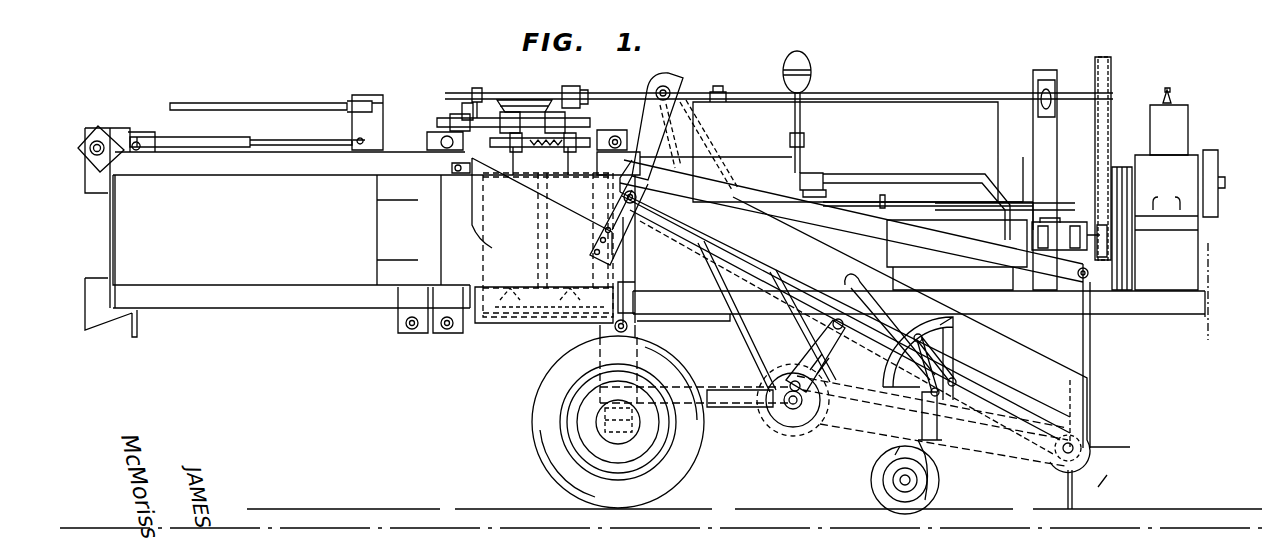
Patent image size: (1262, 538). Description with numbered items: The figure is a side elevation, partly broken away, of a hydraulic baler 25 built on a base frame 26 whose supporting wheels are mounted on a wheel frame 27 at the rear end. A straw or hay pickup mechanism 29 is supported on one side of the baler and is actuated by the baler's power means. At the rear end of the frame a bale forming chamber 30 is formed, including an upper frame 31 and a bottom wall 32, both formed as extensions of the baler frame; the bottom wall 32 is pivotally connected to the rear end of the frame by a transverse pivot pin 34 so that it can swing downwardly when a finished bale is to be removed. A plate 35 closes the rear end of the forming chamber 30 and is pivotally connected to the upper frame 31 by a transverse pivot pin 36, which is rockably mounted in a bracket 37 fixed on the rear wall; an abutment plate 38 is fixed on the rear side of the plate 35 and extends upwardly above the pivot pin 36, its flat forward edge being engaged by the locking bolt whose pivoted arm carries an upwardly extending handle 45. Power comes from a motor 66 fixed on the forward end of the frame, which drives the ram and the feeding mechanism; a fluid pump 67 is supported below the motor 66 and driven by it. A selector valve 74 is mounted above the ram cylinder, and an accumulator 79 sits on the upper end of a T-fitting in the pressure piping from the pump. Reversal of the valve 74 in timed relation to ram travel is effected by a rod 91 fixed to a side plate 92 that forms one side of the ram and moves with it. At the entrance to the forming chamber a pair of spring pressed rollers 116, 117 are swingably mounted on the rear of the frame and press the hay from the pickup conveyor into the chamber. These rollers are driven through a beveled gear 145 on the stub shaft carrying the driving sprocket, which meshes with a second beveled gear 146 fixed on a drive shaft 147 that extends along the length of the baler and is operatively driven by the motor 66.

The hydraulic baler 25 is at (1140, 315).
The base frame 26 is at (1110, 320).
The wheel frame 27 is at (648, 327).
The pickup mechanism 29 is at (1047, 342).
The bale forming chamber 30 is at (226, 280).
The upper frame 31 is at (308, 172).
The bottom wall 32 is at (318, 312).
The pivot pin 34 is at (412, 330).
The plate 35 is at (115, 234).
The transverse pivot pin 36 is at (112, 141).
The bracket 37 is at (122, 161).
The abutment plate 38 is at (98, 184).
The handle 45 is at (245, 104).
The motor 66 is at (1161, 107).
The fluid pump 67 is at (1195, 262).
The selector valve 74 is at (810, 175).
The accumulator 79 is at (806, 63).
The rod 91 is at (845, 243).
The side plate 92 is at (745, 163).
The spring pressed roller 116 is at (534, 184).
The spring pressed roller 117 is at (586, 206).
The beveled gear 145 is at (505, 102).
The second beveled gear 146 is at (572, 90).
The drive shaft 147 is at (863, 98).